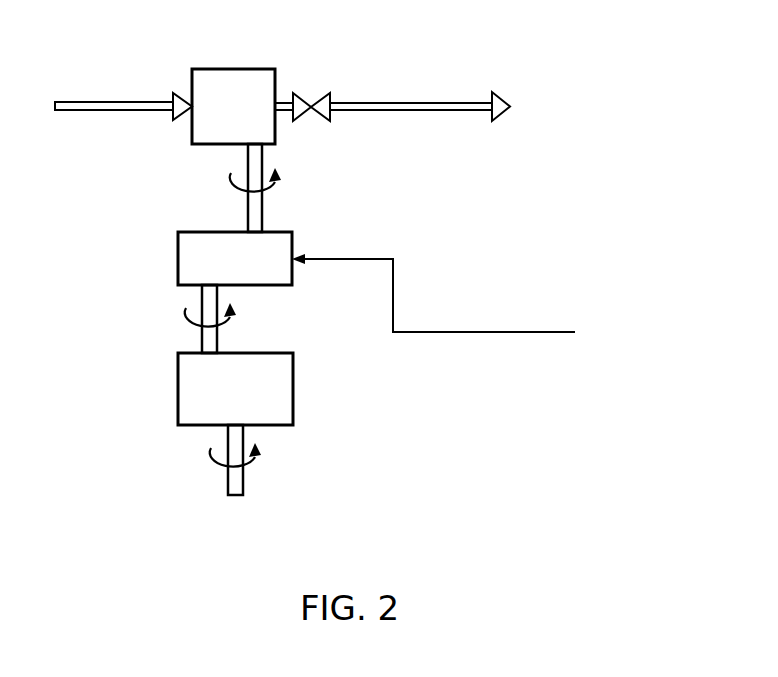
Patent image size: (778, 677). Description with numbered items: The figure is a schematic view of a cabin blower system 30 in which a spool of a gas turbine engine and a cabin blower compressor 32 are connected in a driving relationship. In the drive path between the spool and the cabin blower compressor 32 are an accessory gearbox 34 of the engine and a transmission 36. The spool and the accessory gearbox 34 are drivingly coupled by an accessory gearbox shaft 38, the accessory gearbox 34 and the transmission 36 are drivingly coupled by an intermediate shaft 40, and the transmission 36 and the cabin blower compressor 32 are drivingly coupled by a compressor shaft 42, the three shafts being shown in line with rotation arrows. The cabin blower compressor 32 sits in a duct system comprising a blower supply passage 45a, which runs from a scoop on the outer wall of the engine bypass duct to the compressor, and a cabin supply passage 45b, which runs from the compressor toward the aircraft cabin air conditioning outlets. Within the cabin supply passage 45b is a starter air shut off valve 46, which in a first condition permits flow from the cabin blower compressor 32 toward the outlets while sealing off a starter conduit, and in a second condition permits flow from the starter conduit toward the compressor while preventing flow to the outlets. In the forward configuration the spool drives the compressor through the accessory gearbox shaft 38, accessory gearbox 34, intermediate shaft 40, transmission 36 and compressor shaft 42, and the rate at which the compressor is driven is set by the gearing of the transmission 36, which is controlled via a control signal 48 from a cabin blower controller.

The cabin blower system 30 is at (584, 189).
The cabin blower compressor 32 is at (223, 90).
The accessory gearbox 34 is at (208, 396).
The transmission 36 is at (195, 258).
The accessory gearbox shaft 38 is at (235, 478).
The intermediate shaft 40 is at (208, 303).
The compressor shaft 42 is at (255, 213).
The blower supply passage 45a is at (102, 101).
The cabin supply passage 45b is at (400, 101).
The starter air shut off valve 46 is at (313, 104).
The control signal 48 is at (460, 332).